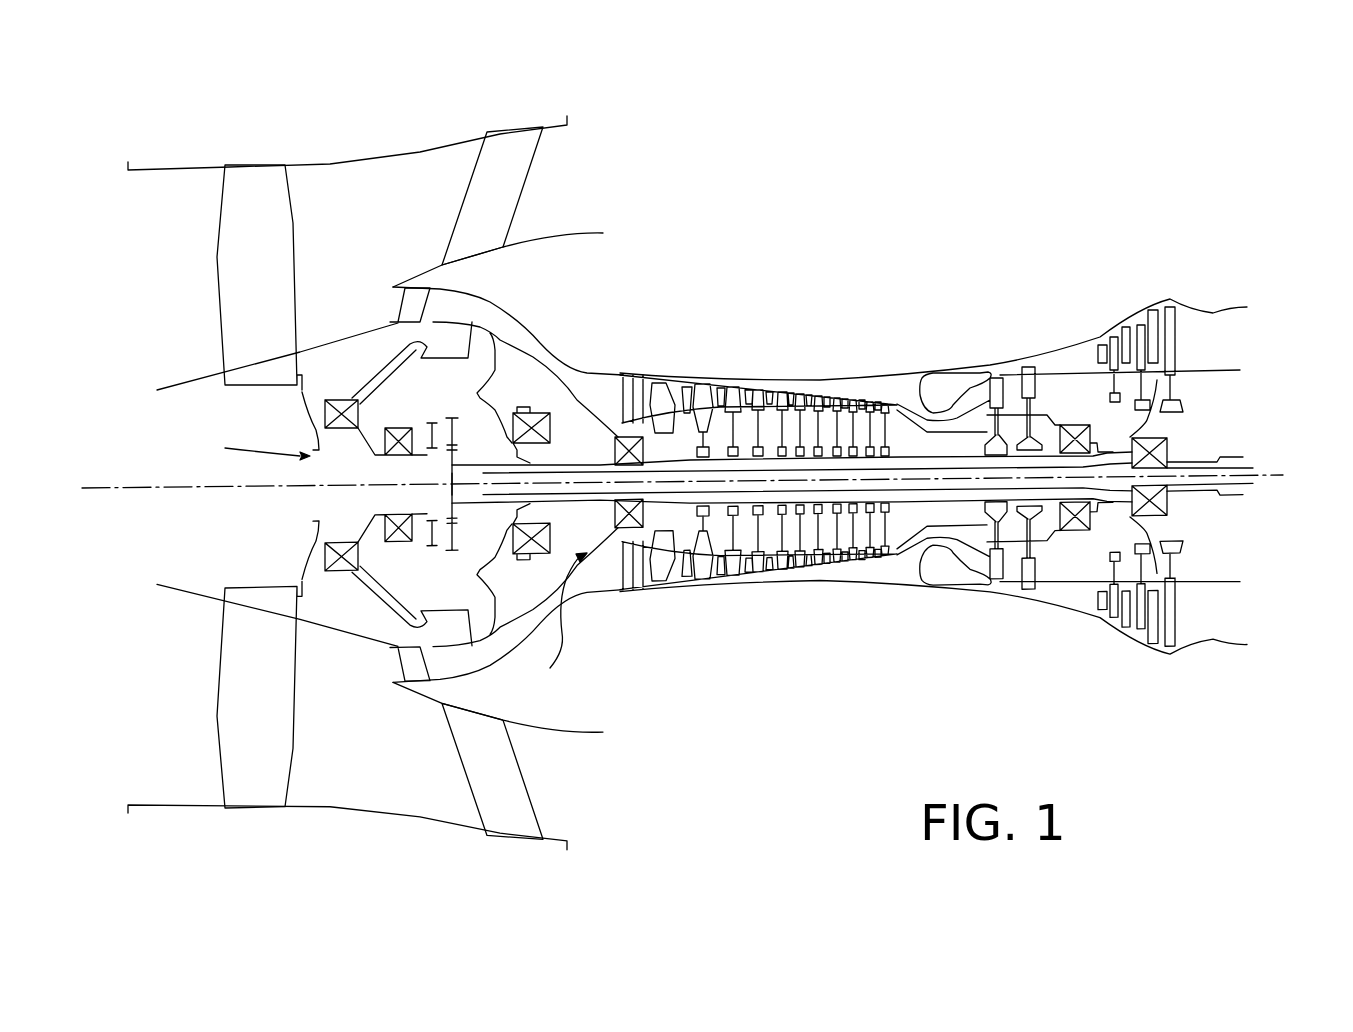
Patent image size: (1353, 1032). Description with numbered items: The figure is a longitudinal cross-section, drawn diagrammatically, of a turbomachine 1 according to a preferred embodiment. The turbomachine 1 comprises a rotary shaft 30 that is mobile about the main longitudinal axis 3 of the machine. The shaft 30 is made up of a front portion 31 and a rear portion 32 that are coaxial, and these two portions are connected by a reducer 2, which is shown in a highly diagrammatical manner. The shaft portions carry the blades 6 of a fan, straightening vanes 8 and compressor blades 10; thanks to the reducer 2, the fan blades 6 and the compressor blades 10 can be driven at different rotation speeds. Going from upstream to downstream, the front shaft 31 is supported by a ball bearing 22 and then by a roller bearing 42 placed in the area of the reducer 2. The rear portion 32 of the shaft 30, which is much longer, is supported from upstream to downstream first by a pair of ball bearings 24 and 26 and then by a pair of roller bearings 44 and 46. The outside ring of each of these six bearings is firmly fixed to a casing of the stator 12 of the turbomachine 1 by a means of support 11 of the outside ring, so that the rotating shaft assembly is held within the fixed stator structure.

The turbomachine 1 is at (960, 337).
The reducer 2 is at (450, 455).
The main longitudinal axis 3 is at (1262, 477).
The blades of a fan 6 is at (222, 192).
The straightening vanes 8 is at (477, 166).
The compressor blades 10 is at (703, 390).
The means of support of the outside ring 11 is at (385, 357).
The casing of the stator 12 is at (592, 265).
The ball bearing 22 is at (343, 400).
The ball bearing 24 is at (535, 413).
The ball bearing 26 is at (662, 387).
The rotary shaft 30 is at (1243, 470).
The front portion of the shaft 31 is at (247, 450).
The rear portion of the shaft 32 is at (554, 621).
The roller bearing 42 is at (330, 572).
The roller bearing 44 is at (1073, 425).
The roller bearing 46 is at (1167, 450).